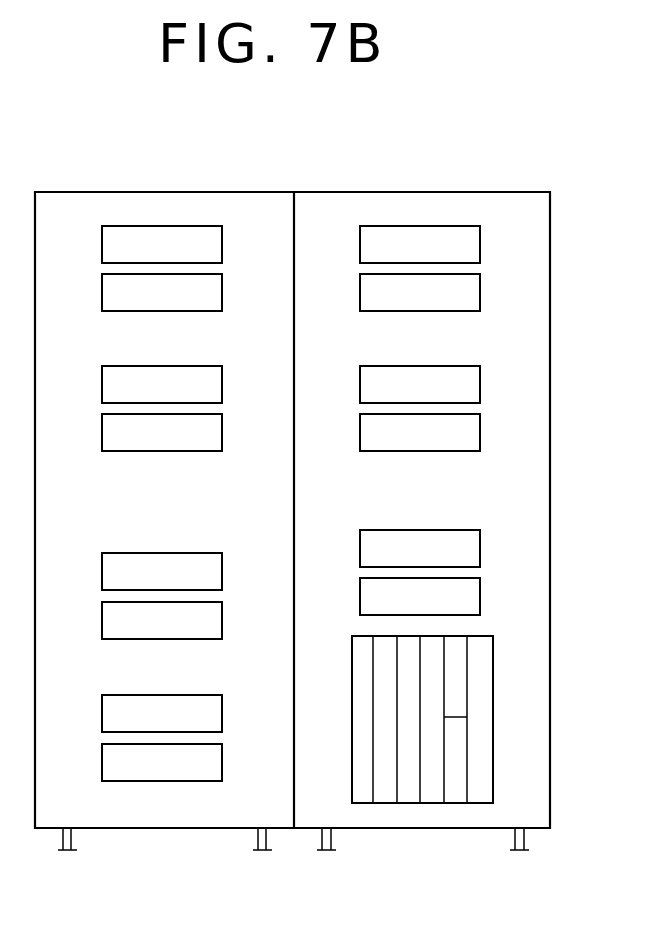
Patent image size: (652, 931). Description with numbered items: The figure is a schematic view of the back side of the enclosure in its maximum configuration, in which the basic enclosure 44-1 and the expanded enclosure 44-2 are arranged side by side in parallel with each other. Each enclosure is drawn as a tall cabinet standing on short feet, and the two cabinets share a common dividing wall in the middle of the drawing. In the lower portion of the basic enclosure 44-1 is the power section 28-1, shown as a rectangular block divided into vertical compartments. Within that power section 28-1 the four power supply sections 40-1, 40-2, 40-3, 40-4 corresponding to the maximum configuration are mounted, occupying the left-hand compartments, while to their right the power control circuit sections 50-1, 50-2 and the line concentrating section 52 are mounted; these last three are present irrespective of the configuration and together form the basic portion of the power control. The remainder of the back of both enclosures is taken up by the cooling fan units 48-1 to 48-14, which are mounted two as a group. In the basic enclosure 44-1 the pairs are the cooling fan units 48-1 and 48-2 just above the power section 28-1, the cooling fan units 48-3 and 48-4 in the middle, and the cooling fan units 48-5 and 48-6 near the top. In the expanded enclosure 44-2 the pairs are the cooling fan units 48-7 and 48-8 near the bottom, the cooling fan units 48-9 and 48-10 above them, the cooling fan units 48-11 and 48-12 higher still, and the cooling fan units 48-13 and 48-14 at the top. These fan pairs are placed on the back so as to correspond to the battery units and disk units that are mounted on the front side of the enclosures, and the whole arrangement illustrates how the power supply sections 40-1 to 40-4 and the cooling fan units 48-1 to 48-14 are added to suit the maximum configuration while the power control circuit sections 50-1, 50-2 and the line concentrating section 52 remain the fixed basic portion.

The basic enclosure 44-1 is at (371, 190).
The expanded enclosure 44-2 is at (111, 190).
The cooling fan unit 48-1 is at (388, 608).
The cooling fan unit 48-2 is at (388, 560).
The cooling fan unit 48-3 is at (388, 444).
The cooling fan unit 48-4 is at (388, 396).
The cooling fan unit 48-5 is at (388, 304).
The cooling fan unit 48-6 is at (388, 256).
The cooling fan unit 48-7 is at (130, 774).
The cooling fan unit 48-8 is at (130, 725).
The cooling fan unit 48-9 is at (130, 632).
The cooling fan unit 48-10 is at (121, 583).
The cooling fan unit 48-11 is at (121, 444).
The cooling fan unit 48-12 is at (121, 396).
The cooling fan unit 48-13 is at (121, 304).
The cooling fan unit 48-14 is at (121, 256).
The power section 28-1 is at (477, 738).
The power supply section 40-1 is at (363, 803).
The power supply section 40-2 is at (387, 803).
The power supply section 40-3 is at (412, 803).
The power supply section 40-4 is at (435, 803).
The power control circuit section 50-1 is at (458, 672).
The power control circuit section 50-2 is at (458, 768).
The line concentrating section 52 is at (482, 718).